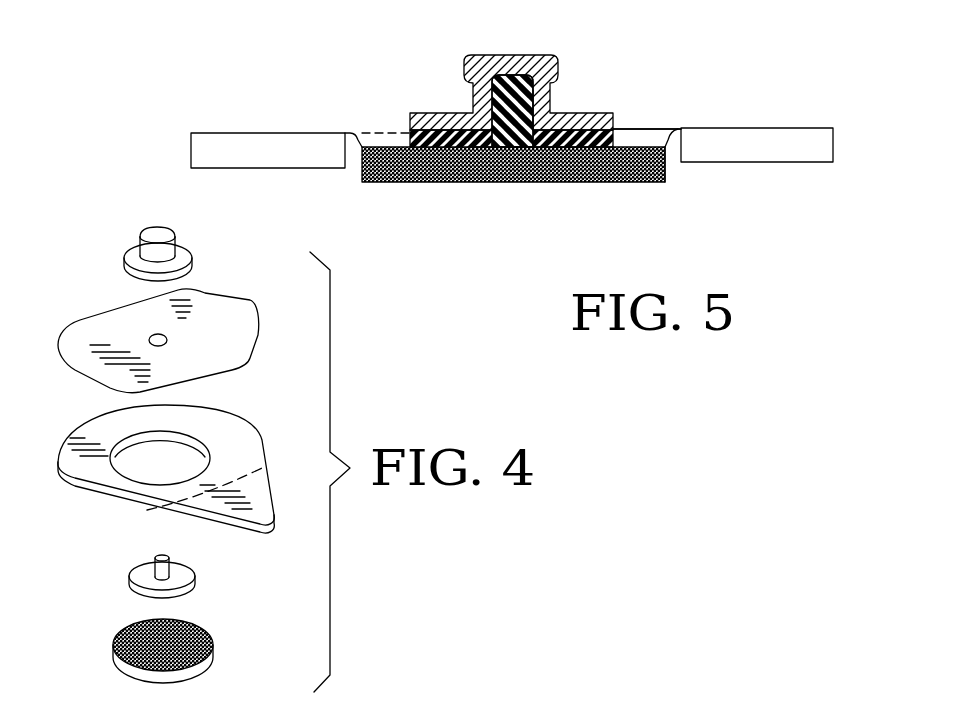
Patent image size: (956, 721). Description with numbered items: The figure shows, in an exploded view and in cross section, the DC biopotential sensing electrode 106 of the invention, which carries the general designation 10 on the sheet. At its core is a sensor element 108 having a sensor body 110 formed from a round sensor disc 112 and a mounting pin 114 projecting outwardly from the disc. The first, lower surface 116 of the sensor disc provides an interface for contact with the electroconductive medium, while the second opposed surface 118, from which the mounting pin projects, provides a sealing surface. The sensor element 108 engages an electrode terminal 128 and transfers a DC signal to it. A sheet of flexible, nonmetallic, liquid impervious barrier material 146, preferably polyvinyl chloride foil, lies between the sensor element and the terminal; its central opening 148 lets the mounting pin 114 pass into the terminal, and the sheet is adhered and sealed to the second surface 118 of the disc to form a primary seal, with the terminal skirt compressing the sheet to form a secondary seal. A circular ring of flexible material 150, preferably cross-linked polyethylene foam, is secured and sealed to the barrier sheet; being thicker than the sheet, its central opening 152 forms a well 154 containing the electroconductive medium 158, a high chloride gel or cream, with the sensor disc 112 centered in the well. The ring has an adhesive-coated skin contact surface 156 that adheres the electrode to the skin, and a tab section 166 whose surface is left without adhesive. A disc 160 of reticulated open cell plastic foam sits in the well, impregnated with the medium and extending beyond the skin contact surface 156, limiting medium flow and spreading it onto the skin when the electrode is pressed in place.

In FIG. 5, the fastener assembly 10 is at (726, 5).
In FIG. 5, the DC biopotential sensing electrode 106 is at (668, 84).
In FIG. 4, the DC biopotential sensing electrode 106 is at (302, 347).
In FIG. 5, the sensor element 108 is at (498, 78).
In FIG. 5, the sensor body 110 is at (537, 108).
In FIG. 4, the sensor body 110 is at (140, 600).
In FIG. 5, the sensor disc 112 is at (587, 150).
In FIG. 4, the sensor disc 112 is at (182, 578).
In FIG. 5, the mounting pin 114 is at (535, 110).
In FIG. 4, the mounting pin 114 is at (170, 557).
In FIG. 5, the first, lower surface 116 is at (528, 150).
In FIG. 4, the second opposed surface 118 is at (165, 590).
In FIG. 5, the electrode terminal 128 is at (478, 58).
In FIG. 4, the electrode terminal 128 is at (132, 252).
In FIG. 5, the barrier material 146 is at (372, 130).
In FIG. 4, the barrier material 146 is at (112, 330).
In FIG. 4, the central opening 148 is at (170, 338).
In FIG. 5, the circular ring of flexible material 150 is at (250, 165).
In FIG. 4, the circular ring of flexible material 150 is at (218, 428).
In FIG. 4, the central opening 152 is at (195, 477).
In FIG. 5, the well 154 is at (670, 152).
In FIG. 5, the skin contact surface 156 is at (750, 163).
In FIG. 5, the electroconductive medium 158 is at (647, 133).
In FIG. 5, the disc 160 is at (467, 175).
In FIG. 4, the disc 160 is at (200, 640).
In FIG. 4, the tab section 166 is at (250, 505).